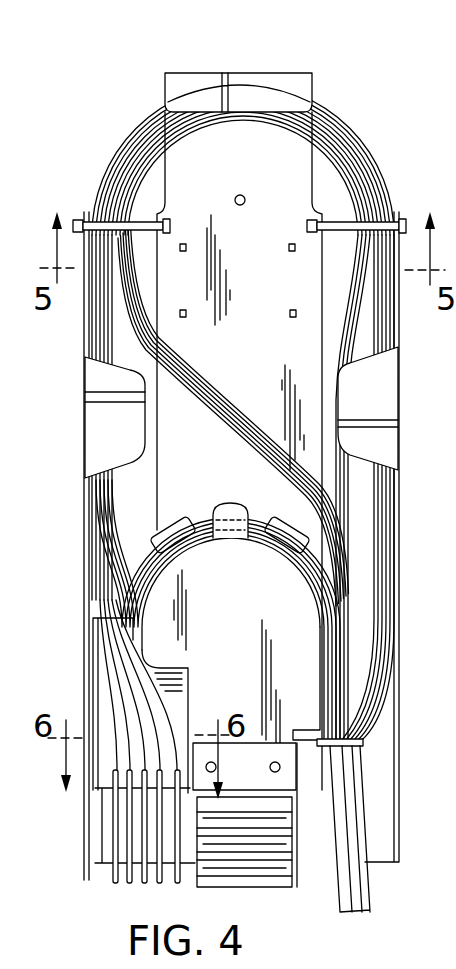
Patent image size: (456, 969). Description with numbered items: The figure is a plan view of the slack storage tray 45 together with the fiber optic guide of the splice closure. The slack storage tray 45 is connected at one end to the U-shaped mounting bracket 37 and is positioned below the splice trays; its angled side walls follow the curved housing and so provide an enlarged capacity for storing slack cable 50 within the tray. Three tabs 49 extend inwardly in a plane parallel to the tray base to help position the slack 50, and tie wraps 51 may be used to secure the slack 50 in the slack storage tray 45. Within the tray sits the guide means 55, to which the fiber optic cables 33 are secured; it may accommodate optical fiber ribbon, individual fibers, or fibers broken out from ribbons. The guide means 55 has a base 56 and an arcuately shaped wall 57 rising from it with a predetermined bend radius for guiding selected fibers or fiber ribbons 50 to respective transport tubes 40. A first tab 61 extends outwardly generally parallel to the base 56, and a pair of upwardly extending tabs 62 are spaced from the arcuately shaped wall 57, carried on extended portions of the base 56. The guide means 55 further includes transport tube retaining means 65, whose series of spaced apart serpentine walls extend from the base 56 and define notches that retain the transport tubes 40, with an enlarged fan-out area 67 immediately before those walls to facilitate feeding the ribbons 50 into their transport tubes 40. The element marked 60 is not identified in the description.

The fiber optic cable 33 is at (340, 875).
The U-shaped mounting bracket 37 is at (297, 860).
The transport tube 40 is at (177, 815).
The slack storage tray 45 is at (86, 512).
The tab 49 is at (260, 90).
The slack cable 50 is at (357, 153).
The tie wrap 51 is at (106, 172).
The guide means 55 is at (130, 553).
The base 56 is at (240, 643).
The arcuately shaped wall 57 is at (318, 683).
The cable clip 60 is at (130, 664).
The first tab 61 is at (228, 525).
The upwardly extending tab 62 is at (165, 528).
The transport tube retaining means 65 is at (108, 796).
The fan-out area 67 is at (105, 695).